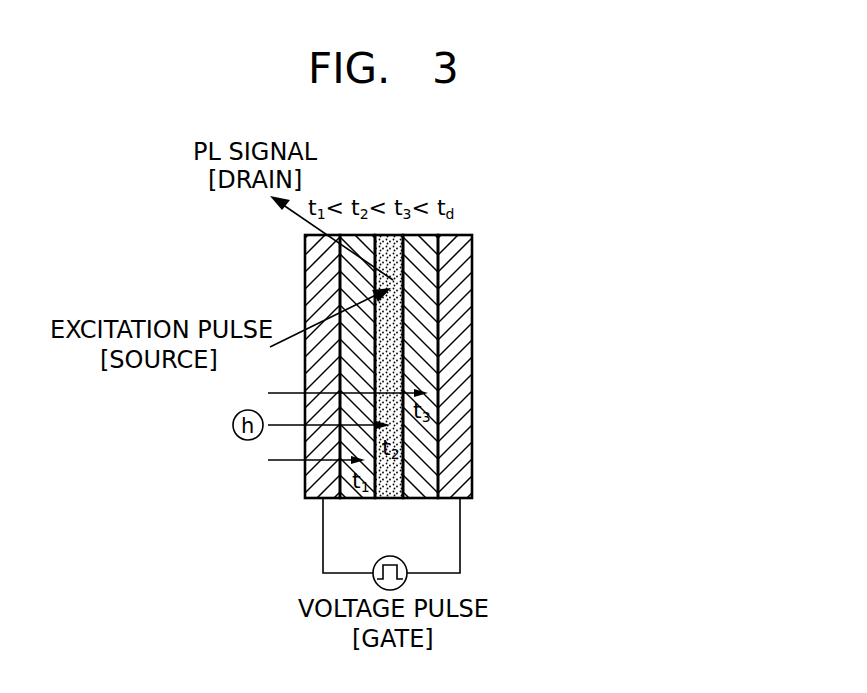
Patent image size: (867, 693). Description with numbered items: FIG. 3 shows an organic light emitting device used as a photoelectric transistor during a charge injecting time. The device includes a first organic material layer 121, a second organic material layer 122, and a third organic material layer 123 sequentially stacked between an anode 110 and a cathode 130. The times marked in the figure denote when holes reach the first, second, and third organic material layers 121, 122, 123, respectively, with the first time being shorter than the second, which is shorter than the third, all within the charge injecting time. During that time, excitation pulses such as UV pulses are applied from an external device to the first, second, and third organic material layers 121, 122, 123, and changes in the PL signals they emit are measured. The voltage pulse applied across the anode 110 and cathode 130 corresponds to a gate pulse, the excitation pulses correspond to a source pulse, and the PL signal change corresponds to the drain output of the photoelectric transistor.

The anode 110 is at (308, 499).
The first organic material layer 121 is at (353, 499).
The second organic material layer 122 is at (392, 499).
The third organic material layer 123 is at (423, 499).
The cathode 130 is at (470, 499).